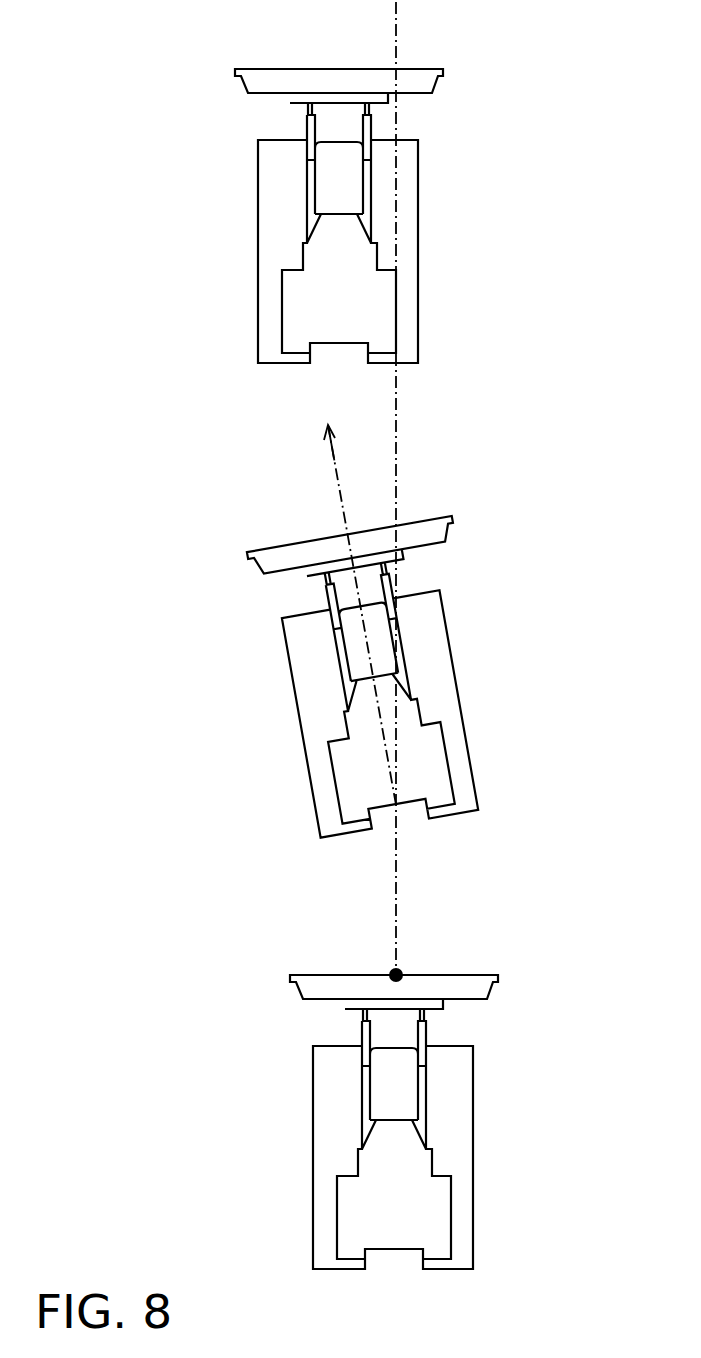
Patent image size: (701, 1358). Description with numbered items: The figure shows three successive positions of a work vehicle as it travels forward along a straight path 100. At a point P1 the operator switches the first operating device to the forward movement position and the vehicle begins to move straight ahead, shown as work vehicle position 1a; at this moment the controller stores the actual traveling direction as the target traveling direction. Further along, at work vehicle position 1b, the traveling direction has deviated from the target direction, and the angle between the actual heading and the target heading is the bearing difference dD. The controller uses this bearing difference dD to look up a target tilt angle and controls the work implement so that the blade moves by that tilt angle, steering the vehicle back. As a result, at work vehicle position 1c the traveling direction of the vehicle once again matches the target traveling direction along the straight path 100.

The work vehicle at start of straight travel 1a is at (474, 1138).
The work vehicle with deviated traveling direction 1b is at (455, 690).
The work vehicle with corrected traveling direction 1c is at (418, 253).
The straight path 100 is at (395, 893).
The point P1 is at (396, 975).
The bearing difference dD is at (392, 456).